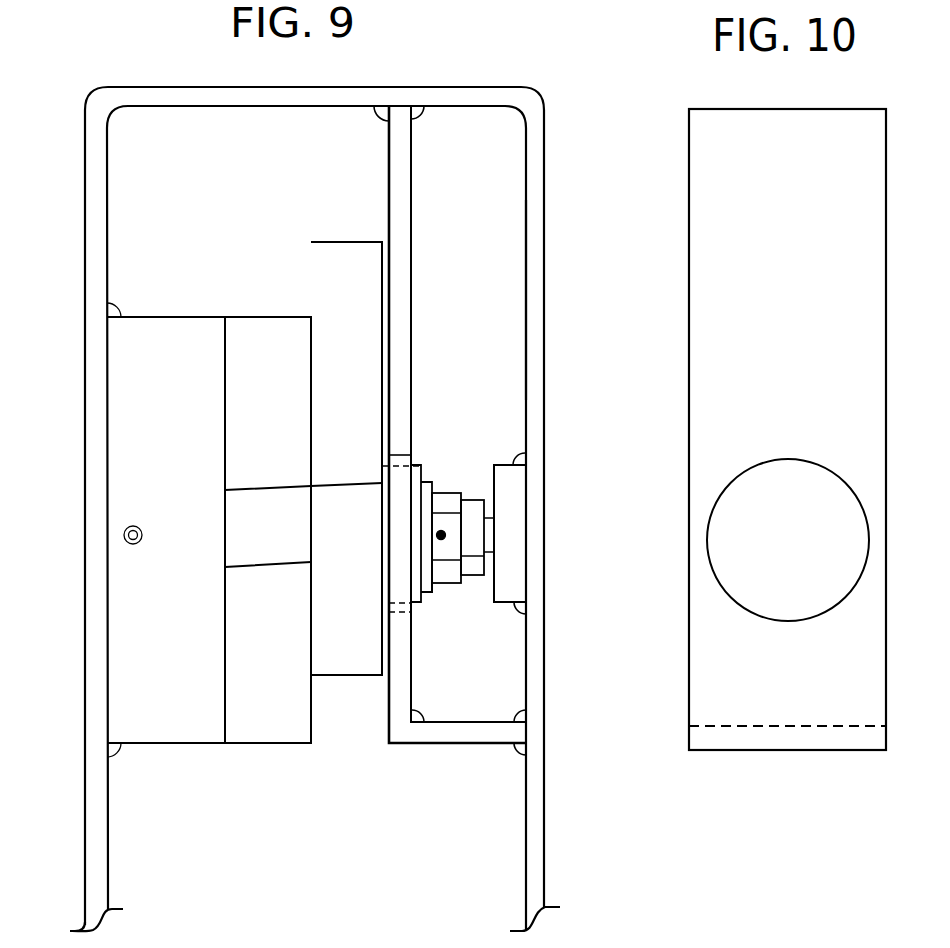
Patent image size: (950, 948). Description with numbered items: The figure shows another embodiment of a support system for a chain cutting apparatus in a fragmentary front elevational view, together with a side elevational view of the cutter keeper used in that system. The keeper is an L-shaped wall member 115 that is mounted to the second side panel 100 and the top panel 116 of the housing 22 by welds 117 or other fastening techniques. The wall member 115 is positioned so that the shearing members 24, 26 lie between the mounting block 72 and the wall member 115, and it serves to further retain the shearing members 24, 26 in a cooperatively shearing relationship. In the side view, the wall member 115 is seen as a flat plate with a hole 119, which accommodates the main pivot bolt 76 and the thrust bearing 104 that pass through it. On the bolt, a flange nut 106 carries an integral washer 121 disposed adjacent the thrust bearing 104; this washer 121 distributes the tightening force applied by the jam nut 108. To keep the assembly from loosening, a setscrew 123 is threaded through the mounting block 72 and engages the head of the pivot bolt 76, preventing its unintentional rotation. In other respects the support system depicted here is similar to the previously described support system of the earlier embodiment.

In FIG. 9, the housing 22 is at (92, 216).
In FIG. 9, the shearing member 24 is at (267, 338).
In FIG. 9, the shearing member 26 is at (348, 262).
In FIG. 9, the mounting block 72 is at (132, 403).
In FIG. 9, the main pivot bolt 76 is at (487, 540).
In FIG. 9, the second side panel 100 is at (533, 357).
In FIG. 9, the thrust bearing 104 is at (418, 612).
In FIG. 9, the flange nut 106 is at (442, 500).
In FIG. 9, the jam nut 108 is at (470, 568).
In FIG. 9, the L-shaped wall member 115 is at (398, 167).
In FIG. 10, the L-shaped wall member 115 is at (687, 185).
In FIG. 9, the top panel 116 is at (200, 98).
In FIG. 9, the welds 117 is at (378, 120).
In FIG. 9, the hole 119 is at (397, 453).
In FIG. 10, the hole 119 is at (750, 612).
In FIG. 9, the washer 121 is at (432, 585).
In FIG. 9, the setscrew 123 is at (133, 546).